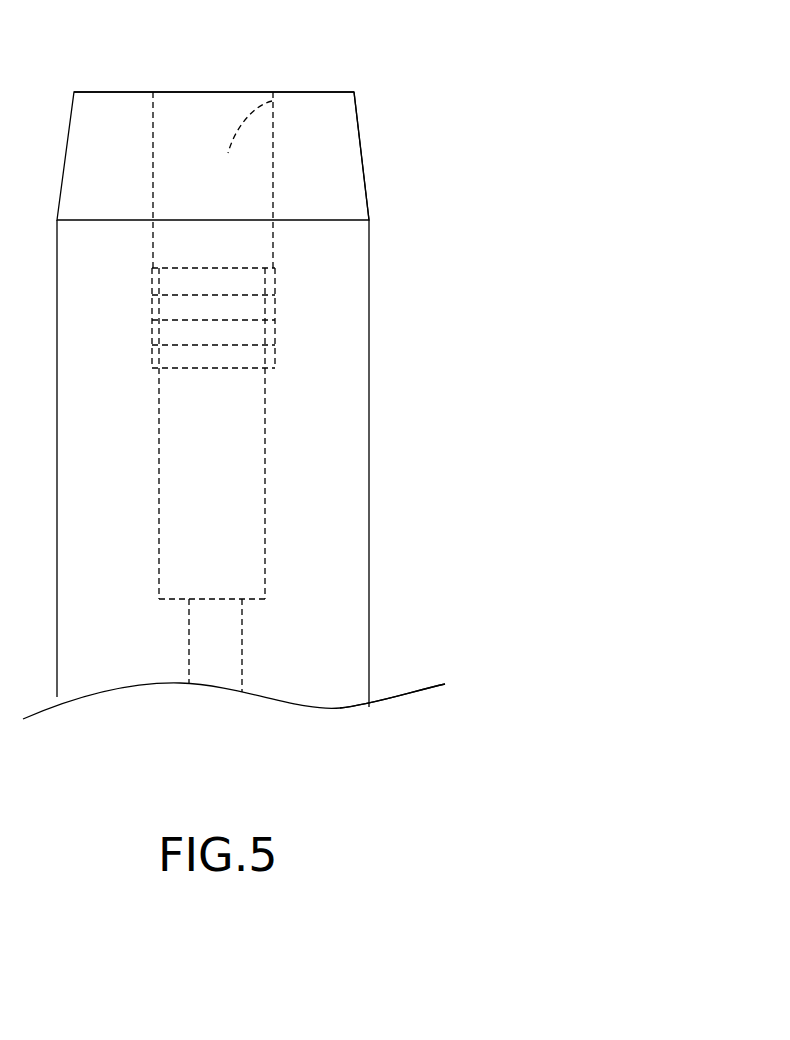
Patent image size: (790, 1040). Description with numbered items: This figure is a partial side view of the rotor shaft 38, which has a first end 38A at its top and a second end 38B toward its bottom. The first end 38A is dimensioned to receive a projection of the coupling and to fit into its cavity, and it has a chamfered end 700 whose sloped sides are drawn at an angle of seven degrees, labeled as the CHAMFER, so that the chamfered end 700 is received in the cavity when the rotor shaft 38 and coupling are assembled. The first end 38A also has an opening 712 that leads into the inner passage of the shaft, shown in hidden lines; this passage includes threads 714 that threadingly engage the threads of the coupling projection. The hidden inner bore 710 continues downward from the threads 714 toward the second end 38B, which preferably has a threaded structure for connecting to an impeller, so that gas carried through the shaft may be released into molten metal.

The rotor shaft 38 is at (370, 343).
The first end 38A is at (367, 143).
The second end 38B is at (398, 698).
The chamfered end 700 is at (354, 108).
The internal bore 710 is at (279, 90).
The opening 712 is at (177, 92).
The threads 714 is at (293, 268).
The 7° chamfer CHAMFER is at (367, 182).